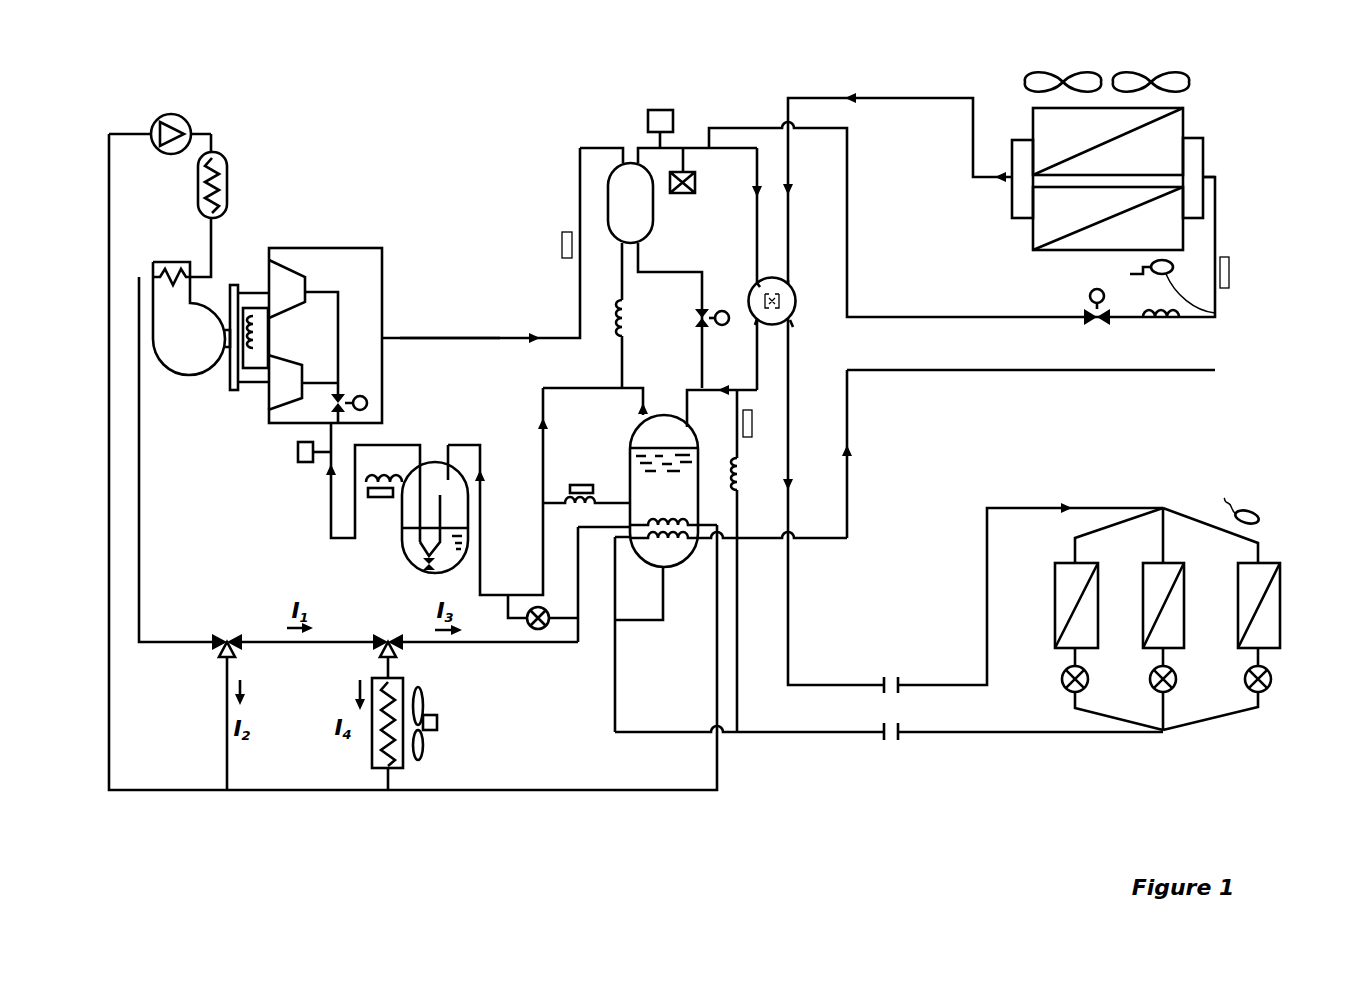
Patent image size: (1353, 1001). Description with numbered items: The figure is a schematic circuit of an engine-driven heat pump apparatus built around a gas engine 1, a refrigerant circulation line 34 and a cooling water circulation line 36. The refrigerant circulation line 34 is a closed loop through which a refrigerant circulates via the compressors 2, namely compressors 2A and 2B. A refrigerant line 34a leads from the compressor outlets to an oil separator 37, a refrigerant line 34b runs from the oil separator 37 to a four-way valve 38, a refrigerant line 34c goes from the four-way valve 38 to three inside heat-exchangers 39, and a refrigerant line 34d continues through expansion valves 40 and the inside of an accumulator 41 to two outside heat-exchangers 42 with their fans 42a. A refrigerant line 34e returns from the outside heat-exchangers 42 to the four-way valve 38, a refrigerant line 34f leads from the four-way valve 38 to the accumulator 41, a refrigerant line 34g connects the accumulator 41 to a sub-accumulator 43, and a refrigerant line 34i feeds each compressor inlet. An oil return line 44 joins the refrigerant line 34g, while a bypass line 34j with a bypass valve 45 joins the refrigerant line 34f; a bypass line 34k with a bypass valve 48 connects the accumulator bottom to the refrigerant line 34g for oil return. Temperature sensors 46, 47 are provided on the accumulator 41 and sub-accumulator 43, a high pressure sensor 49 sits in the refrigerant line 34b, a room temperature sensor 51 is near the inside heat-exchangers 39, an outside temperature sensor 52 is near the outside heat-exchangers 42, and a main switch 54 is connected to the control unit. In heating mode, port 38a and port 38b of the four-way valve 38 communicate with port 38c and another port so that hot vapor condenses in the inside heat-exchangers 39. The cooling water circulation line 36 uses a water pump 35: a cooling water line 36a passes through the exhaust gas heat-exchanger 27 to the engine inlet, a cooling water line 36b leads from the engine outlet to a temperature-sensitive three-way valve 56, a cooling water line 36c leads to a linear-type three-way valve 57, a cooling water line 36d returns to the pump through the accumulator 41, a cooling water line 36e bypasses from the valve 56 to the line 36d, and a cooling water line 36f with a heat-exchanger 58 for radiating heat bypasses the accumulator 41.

The gas engine 1 is at (191, 376).
The compressors 2 is at (256, 260).
The compressor 2A is at (305, 280).
The compressor 2B is at (278, 357).
The exhaust gas heat-exchanger 27 is at (228, 172).
The refrigerant circulation line 34 is at (446, 328).
The refrigerant line 34a is at (442, 340).
The refrigerant line 34b is at (757, 222).
The refrigerant line 34c is at (797, 620).
The refrigerant line 34d is at (988, 743).
The refrigerant line 34e is at (880, 97).
The refrigerant line 34f is at (760, 372).
The refrigerant line 34g is at (485, 522).
The refrigerant line 34i is at (330, 501).
The bypass line 34j is at (657, 272).
The bypass line 34k is at (640, 621).
The water pump 35 is at (185, 121).
The cooling water circulation line 36 is at (525, 800).
The cooling water line 36a is at (211, 235).
The cooling water line 36b is at (142, 555).
The cooling water line 36c is at (303, 647).
The cooling water line 36d is at (508, 643).
The cooling water line 36e is at (225, 683).
The cooling water line 36f is at (390, 665).
The oil separator 37 is at (653, 212).
The four-way valve 38 is at (797, 303).
The port 38a is at (760, 287).
The port 38b is at (754, 325).
The port 38c is at (797, 328).
The inside heat-exchangers 39 is at (1282, 612).
The expansion valves 40 is at (1295, 688).
The accumulator 41 is at (630, 433).
The outside heat-exchangers 42 is at (1033, 237).
The fans 42a is at (1190, 70).
The sub-accumulator 43 is at (408, 563).
The oil return line 44 is at (623, 365).
The bypass valve 45 is at (690, 318).
The temperature sensor 46 is at (582, 485).
The temperature sensor 47 is at (380, 497).
The bypass valve 48 is at (542, 633).
The high pressure sensor 49 is at (665, 108).
The room temperature sensor 51 is at (1254, 510).
The outside temperature sensor 52 is at (1217, 313).
The main switch 54 is at (298, 452).
The temperature-sensitive three-way valve 56 is at (232, 632).
The linear-type three-way valve 57 is at (385, 632).
The heat-exchanger for radiating heat 58 is at (372, 760).